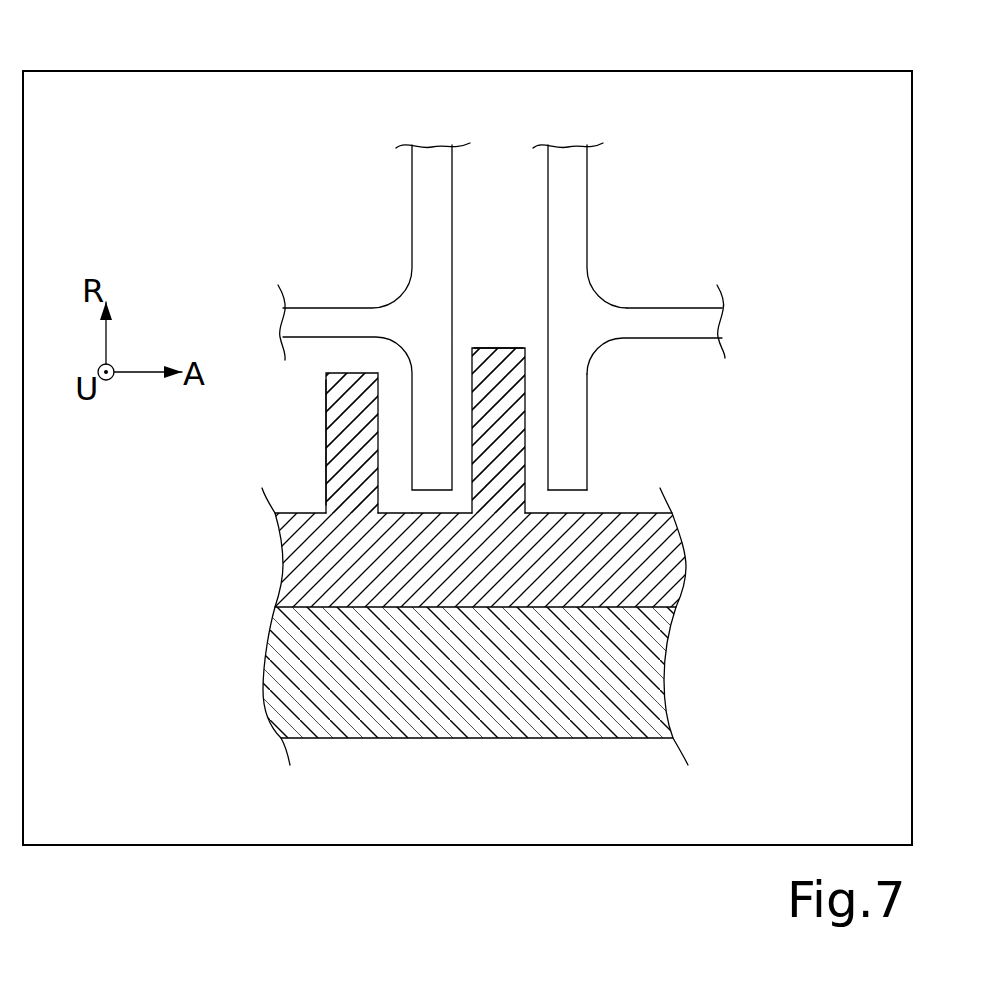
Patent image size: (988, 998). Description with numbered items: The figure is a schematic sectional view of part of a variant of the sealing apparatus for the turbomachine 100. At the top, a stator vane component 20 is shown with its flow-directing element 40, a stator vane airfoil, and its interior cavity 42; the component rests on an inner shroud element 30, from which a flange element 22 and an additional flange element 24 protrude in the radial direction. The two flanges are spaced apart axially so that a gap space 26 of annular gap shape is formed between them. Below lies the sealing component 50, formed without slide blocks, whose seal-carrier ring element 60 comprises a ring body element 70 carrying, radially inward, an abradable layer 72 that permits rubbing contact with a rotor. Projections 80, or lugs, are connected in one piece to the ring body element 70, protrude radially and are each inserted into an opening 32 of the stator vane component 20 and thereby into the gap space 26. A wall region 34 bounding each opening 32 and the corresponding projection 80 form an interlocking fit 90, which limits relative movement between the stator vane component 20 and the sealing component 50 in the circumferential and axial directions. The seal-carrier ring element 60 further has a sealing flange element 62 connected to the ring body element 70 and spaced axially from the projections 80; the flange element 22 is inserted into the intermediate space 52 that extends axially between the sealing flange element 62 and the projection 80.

The turbomachine 100 is at (758, 70).
The stator vane component 20 is at (592, 180).
The flow-directing element 40 is at (570, 222).
The interior cavity 42 is at (490, 230).
The inner shroud element 30 is at (688, 325).
The wall region 34 is at (460, 363).
The additional flange element 24 is at (573, 388).
The gap space 26 is at (525, 427).
The flange element 22 is at (380, 388).
The sealing flange element 62 is at (333, 450).
The projection 80 is at (525, 487).
The interlocking fit 90 is at (533, 490).
The opening 32 is at (463, 487).
The intermediate space 52 is at (398, 488).
The seal-carrier ring element 60 is at (622, 508).
The sealing component 50 is at (277, 566).
The ring body element 70 is at (650, 570).
The abradable layer 72 is at (650, 682).